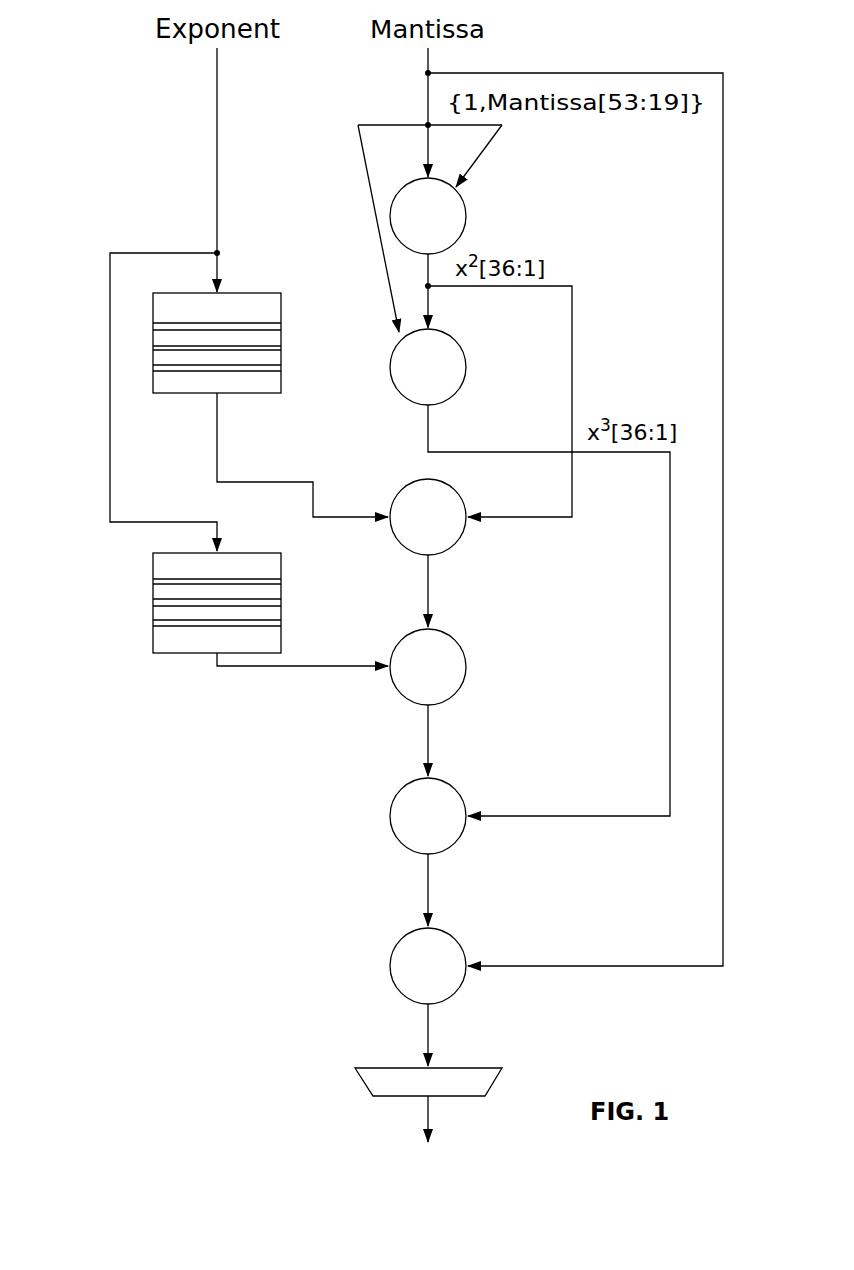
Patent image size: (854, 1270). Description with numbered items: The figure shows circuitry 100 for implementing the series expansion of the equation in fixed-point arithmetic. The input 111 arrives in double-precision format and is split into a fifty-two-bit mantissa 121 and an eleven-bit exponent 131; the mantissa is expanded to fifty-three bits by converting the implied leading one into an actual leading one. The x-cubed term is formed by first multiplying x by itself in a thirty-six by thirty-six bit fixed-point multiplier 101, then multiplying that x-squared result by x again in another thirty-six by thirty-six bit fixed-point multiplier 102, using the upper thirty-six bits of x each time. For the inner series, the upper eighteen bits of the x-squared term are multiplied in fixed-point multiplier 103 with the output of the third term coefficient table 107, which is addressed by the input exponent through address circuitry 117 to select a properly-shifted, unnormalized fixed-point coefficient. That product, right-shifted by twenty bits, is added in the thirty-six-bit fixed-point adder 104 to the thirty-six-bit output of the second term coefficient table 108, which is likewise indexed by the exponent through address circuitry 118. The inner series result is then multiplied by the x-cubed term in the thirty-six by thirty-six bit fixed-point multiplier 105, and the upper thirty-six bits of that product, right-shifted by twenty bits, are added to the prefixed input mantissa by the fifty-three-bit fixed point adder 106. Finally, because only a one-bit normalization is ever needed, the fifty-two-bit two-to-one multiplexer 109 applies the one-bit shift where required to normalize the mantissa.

The circuitry 100 is at (124, 28).
The fixed-point multiplier 101 is at (462, 195).
The fixed-point multiplier 102 is at (458, 340).
The fixed-point multiplier 103 is at (458, 490).
The fixed-point adder 104 is at (458, 640).
The fixed-point multiplier 105 is at (458, 790).
The fixed point adder 106 is at (458, 940).
The third term coefficient table 107 is at (163, 338).
The second term coefficient table 108 is at (163, 598).
The 2:1 multiplexer 109 is at (488, 1067).
The input 111 is at (428, 108).
The address circuitry 117 is at (217, 343).
The address circuitry 118 is at (217, 603).
The mantissa 121 is at (428, 56).
The exponent 131 is at (217, 61).